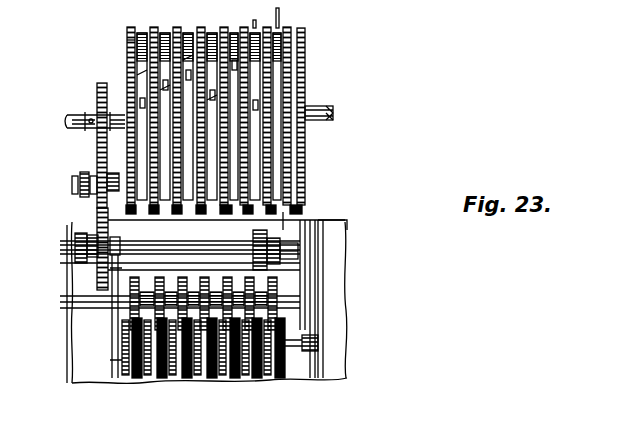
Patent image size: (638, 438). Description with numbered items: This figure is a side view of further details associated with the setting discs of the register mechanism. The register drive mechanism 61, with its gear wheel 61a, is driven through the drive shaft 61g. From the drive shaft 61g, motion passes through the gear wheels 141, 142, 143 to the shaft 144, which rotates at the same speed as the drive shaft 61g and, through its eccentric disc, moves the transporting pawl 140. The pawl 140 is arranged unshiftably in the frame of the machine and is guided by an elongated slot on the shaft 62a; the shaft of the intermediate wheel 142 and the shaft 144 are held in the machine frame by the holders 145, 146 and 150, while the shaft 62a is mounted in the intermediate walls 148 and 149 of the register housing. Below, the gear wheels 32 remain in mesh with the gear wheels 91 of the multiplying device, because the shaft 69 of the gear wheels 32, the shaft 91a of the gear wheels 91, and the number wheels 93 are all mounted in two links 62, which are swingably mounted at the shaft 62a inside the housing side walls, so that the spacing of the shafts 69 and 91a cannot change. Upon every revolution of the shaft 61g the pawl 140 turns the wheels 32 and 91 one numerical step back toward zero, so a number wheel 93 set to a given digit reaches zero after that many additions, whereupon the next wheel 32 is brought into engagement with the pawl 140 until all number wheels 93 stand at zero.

The register drive mechanism 61 is at (302, 70).
The gear wheel of drum 61a is at (128, 40).
The drive shaft 61g is at (322, 104).
The gear wheel 141 is at (97, 90).
The intermediate wheel 142 is at (82, 178).
The holder 150 is at (100, 205).
The holder 145 is at (86, 233).
The gear wheel 143 is at (100, 268).
The gear wheel 32 is at (310, 283).
The shaft 62a is at (305, 263).
The holder 146 is at (268, 245).
The shaft 144 is at (292, 252).
The transporting pawl 140 is at (288, 222).
The shaft 69 is at (92, 312).
The link 62 is at (122, 328).
The number wheel 93 is at (152, 375).
The gear wheel 91 is at (113, 360).
The shaft 91a is at (318, 337).
The intermediate wall 149 is at (322, 366).
The intermediate wall 148 is at (118, 362).